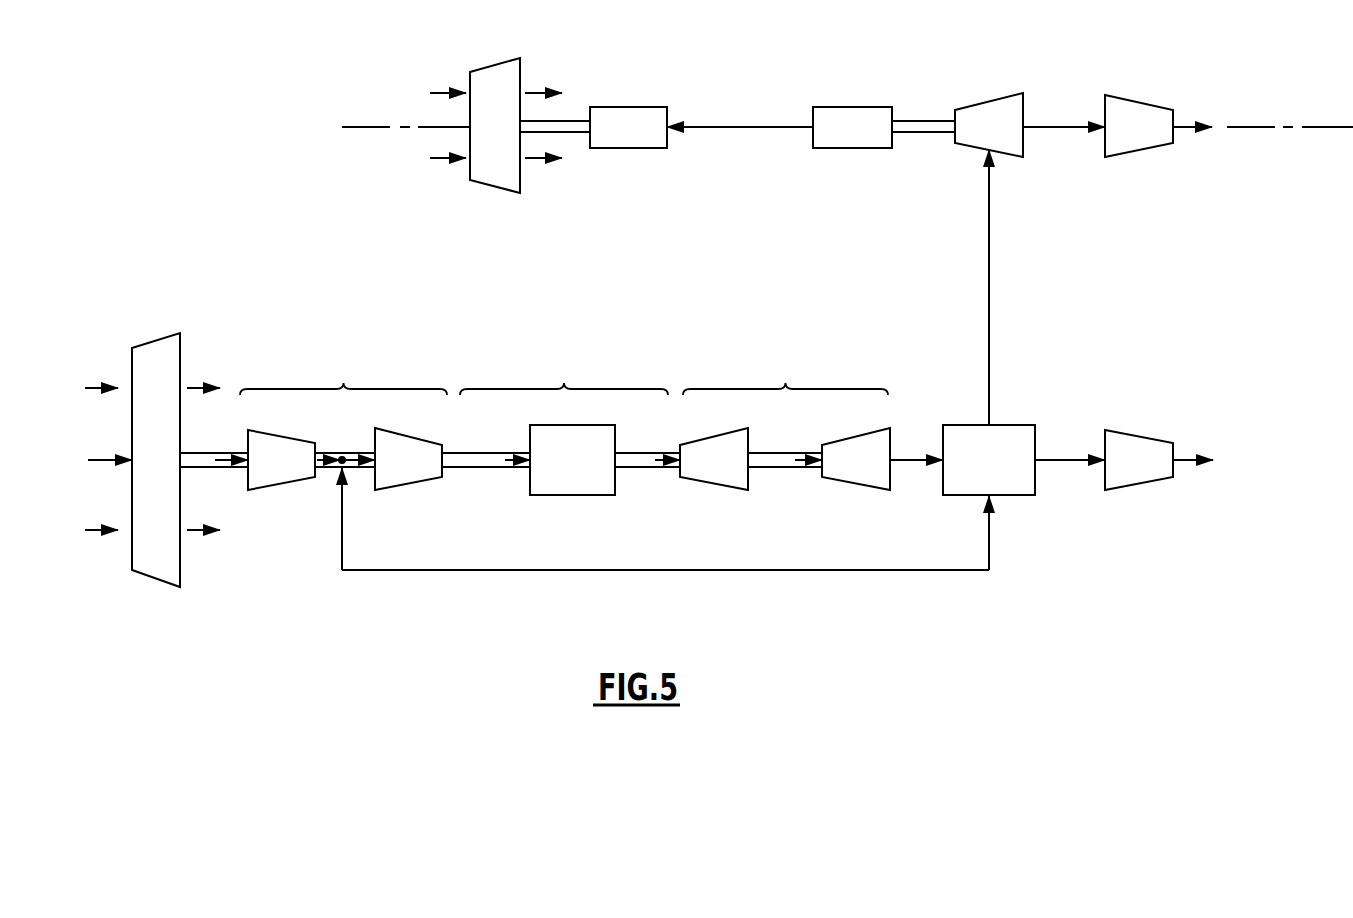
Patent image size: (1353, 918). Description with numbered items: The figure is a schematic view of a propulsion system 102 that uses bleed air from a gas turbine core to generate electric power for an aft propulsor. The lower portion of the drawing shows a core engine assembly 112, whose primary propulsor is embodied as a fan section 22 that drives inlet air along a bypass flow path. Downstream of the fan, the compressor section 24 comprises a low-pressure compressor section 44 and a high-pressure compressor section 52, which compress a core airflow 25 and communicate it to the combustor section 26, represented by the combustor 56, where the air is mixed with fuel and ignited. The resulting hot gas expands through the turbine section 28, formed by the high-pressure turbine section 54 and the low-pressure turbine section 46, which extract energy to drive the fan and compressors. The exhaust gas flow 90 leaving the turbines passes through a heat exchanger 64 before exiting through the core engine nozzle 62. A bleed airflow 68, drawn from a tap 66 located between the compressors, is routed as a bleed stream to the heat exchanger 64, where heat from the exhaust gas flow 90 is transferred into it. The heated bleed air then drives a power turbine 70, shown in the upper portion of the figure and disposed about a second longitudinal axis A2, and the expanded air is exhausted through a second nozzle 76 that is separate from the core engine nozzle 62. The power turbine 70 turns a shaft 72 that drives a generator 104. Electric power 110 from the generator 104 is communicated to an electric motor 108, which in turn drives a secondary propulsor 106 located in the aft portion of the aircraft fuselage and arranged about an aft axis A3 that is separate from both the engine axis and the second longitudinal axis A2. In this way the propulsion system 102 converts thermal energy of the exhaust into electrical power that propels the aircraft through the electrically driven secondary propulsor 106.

The fan section 22 is at (182, 343).
The compressor section 24 is at (343, 374).
The combustor section 26 is at (564, 374).
The turbine section 28 is at (785, 374).
The low-pressure compressor section 44 is at (285, 437).
The high-pressure compressor section 52 is at (412, 437).
The core airflow 25 is at (490, 469).
The combustor 56 is at (564, 496).
The high-pressure turbine section 54 is at (698, 481).
The low-pressure turbine section 46 is at (862, 486).
The tap 66 is at (337, 481).
The bleed airflow 68 is at (620, 571).
The heat exchanger 64 is at (1035, 437).
The core engine nozzle 62 is at (1140, 484).
The exhaust gas flow 90 is at (912, 467).
The power turbine 70 is at (990, 98).
The shaft 72 is at (928, 133).
The second nozzle 76 is at (1141, 150).
The generator 104 is at (852, 107).
The electric motor 108 is at (625, 107).
The secondary propulsor 106 is at (521, 70).
The electric power 110 is at (740, 128).
The propulsion system 102 is at (312, 233).
The core engine assembly 112 is at (306, 589).
The second longitudinal axis A2 is at (1245, 127).
The aft axis A3 is at (362, 127).